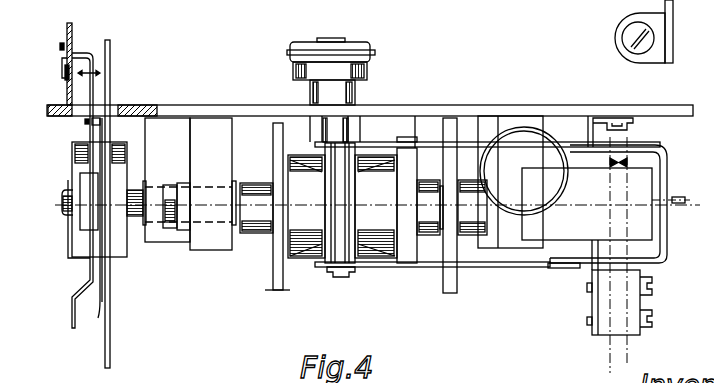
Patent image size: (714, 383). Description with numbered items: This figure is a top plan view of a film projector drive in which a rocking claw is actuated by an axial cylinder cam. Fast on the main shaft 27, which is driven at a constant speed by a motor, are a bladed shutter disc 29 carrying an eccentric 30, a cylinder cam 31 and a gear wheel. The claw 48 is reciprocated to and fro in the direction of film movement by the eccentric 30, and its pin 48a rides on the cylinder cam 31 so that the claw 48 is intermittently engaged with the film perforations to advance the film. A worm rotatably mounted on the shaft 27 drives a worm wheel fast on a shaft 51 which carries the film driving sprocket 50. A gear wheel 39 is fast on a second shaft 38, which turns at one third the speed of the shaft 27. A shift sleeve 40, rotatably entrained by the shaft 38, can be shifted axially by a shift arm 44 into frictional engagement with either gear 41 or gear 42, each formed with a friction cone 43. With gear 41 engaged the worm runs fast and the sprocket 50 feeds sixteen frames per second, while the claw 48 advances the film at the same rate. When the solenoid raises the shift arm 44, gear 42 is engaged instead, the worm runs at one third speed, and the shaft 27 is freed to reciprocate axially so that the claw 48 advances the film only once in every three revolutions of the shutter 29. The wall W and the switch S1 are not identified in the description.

The wall W is at (68, 62).
The claw 48 is at (78, 54).
The pin 48a is at (90, 125).
The bladed shutter disc 29 is at (110, 62).
The cylinder cam 31 is at (98, 318).
The shaft 27 is at (79, 254).
The eccentric 30 is at (123, 260).
The second shaft 38 is at (167, 200).
The gear 41 is at (277, 266).
The shift sleeve 40 is at (300, 163).
The friction cone 43 is at (375, 233).
The gear 42 is at (407, 248).
The gear wheel 39 is at (457, 287).
The shift arm 44 is at (662, 153).
The switch S1 is at (630, 336).
The film driving sprocket 50 is at (368, 48).
The shaft 51 is at (322, 40).